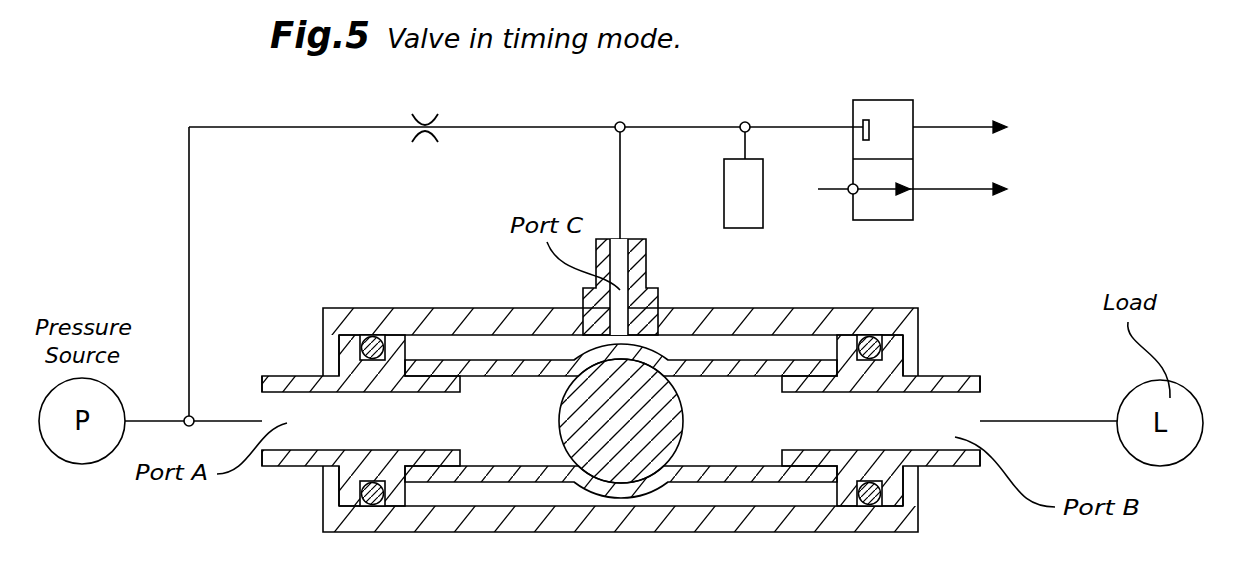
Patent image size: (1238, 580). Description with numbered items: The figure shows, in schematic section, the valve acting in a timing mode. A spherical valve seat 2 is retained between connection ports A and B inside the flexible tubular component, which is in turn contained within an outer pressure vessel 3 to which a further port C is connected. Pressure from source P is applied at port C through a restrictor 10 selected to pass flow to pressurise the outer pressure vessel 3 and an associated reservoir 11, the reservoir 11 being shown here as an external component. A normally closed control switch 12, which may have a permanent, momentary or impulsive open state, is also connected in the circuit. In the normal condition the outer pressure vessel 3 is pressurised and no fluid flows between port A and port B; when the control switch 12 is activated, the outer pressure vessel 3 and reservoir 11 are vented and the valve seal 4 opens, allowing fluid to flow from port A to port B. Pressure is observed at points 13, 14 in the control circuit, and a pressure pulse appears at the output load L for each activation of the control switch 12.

The spherical valve seat 2 is at (620, 432).
The outer pressure vessel 3 is at (757, 317).
The valve seal 4 is at (575, 381).
The restrictor 10 is at (408, 123).
The reservoir 11 is at (733, 176).
The control switch 12 is at (893, 120).
The pressure point in control circuit 13 is at (517, 130).
The pressure point at output load 14 is at (1030, 420).